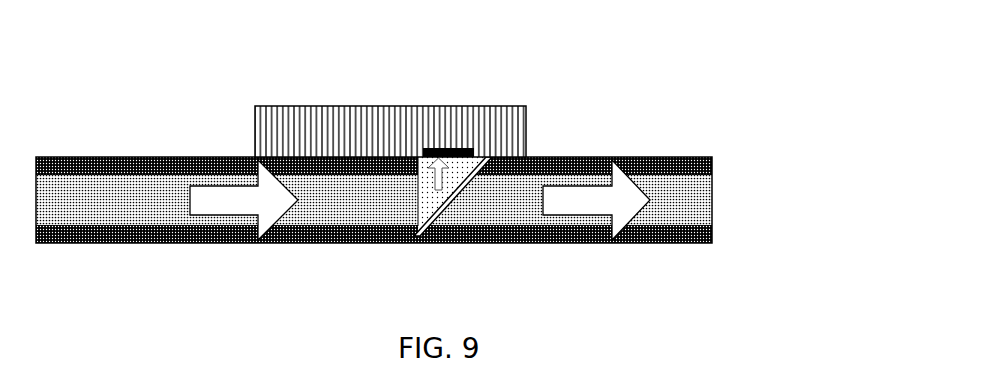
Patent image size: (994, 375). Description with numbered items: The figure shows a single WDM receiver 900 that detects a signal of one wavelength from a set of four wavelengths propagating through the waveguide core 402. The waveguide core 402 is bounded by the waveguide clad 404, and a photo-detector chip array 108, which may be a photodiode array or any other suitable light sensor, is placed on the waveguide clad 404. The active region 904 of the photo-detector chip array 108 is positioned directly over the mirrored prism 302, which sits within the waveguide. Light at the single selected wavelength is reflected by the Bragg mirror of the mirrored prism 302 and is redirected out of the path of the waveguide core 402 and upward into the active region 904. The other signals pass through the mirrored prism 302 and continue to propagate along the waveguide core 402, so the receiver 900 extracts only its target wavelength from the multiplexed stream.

The WDM receiver 900 is at (430, 156).
The photo-detector chip array 108 is at (342, 106).
The active region 904 is at (447, 148).
The waveguide clad 404 is at (712, 158).
The waveguide core 402 is at (712, 200).
The mirrored prism 302 is at (458, 205).